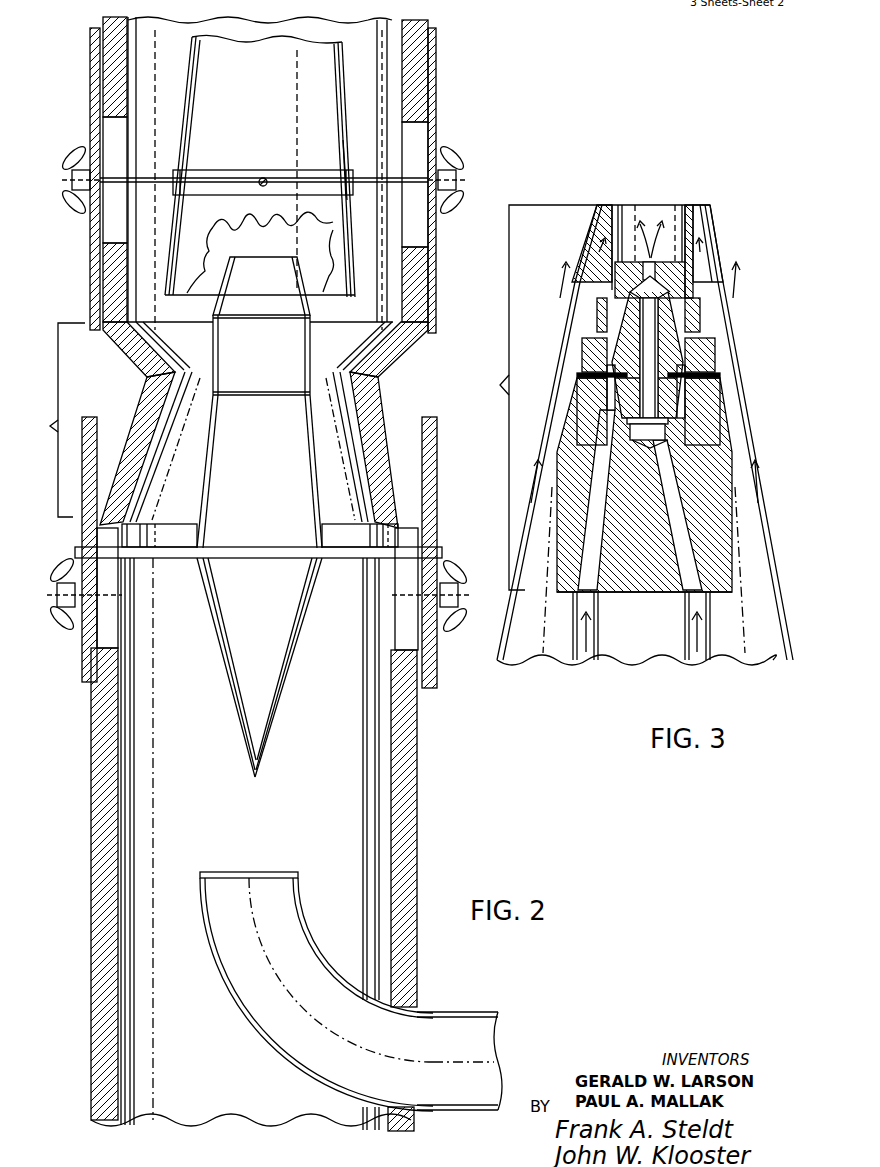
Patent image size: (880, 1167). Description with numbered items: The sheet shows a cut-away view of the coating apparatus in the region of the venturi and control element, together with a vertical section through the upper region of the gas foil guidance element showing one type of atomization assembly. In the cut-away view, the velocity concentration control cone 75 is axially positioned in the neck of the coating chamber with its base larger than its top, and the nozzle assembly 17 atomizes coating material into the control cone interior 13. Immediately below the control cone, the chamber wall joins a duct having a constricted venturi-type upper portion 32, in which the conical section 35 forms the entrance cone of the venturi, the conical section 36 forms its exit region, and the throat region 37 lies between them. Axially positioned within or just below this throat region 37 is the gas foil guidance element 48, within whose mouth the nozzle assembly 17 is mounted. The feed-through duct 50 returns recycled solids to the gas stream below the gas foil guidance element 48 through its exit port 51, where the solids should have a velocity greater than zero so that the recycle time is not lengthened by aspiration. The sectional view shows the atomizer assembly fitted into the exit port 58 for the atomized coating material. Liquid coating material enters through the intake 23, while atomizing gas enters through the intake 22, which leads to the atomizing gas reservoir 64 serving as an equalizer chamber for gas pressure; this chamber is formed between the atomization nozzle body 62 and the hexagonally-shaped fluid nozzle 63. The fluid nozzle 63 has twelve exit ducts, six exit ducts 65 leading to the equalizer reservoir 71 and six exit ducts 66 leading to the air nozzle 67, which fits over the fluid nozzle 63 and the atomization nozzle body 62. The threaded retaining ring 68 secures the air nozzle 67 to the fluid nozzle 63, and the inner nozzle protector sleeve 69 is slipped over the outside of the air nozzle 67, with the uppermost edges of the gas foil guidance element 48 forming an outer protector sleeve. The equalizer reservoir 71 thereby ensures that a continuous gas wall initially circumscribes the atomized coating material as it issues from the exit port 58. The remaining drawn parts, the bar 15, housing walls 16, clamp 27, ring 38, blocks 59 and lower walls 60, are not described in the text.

In FIG. 2, the control cone interior 13 is at (320, 93).
In FIG. 2, the cross bar 15 is at (362, 182).
In FIG. 2, the outer housing wall 16 is at (98, 90).
In FIG. 3, the nozzle assembly 17 is at (500, 385).
In FIG. 2, the intake 22 is at (372, 560).
In FIG. 3, the intake 22 is at (598, 634).
In FIG. 2, the intake 23 is at (170, 554).
In FIG. 3, the intake 23 is at (710, 642).
In FIG. 2, the clamp 27 is at (108, 142).
In FIG. 2, the constricted venturi-type upper portion 32 is at (50, 427).
In FIG. 2, the conical section 35 is at (402, 424).
In FIG. 2, the conical section 36 is at (408, 338).
In FIG. 2, the throat region 37 is at (384, 375).
In FIG. 2, the ring flange 38 is at (345, 524).
In FIG. 2, the gas foil guidance element 48 is at (222, 632).
In FIG. 3, the gas foil guidance element 48 is at (598, 206).
In FIG. 2, the feed-through duct 50 is at (464, 1012).
In FIG. 2, the exit port 51 is at (250, 872).
In FIG. 2, the exit port 58 is at (260, 257).
In FIG. 3, the exit port 58 is at (662, 204).
In FIG. 2, the clamp block 59 is at (104, 630).
In FIG. 2, the lower wall 60 is at (94, 671).
In FIG. 3, the atomization nozzle body 62 is at (726, 544).
In FIG. 3, the fluid nozzle 63 is at (692, 364).
In FIG. 3, the atomizing gas reservoir 64 is at (596, 392).
In FIG. 3, the exit ducts 65 is at (582, 356).
In FIG. 3, the exit ducts 66 is at (680, 350).
In FIG. 3, the air nozzle 67 is at (672, 268).
In FIG. 3, the threaded retaining ring 68 is at (700, 314).
In FIG. 3, the inner nozzle protector sleeve 69 is at (616, 204).
In FIG. 3, the equalizer reservoir 71 is at (602, 246).
In FIG. 2, the velocity concentration control cone 75 is at (350, 150).